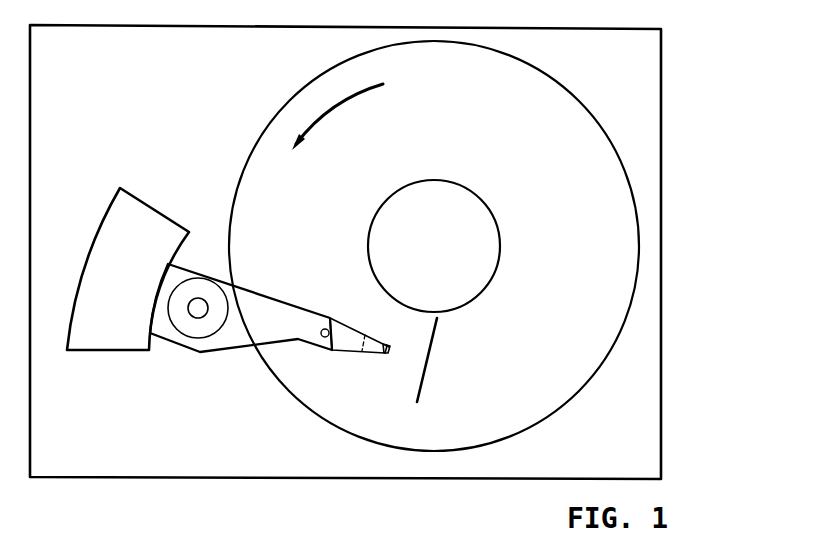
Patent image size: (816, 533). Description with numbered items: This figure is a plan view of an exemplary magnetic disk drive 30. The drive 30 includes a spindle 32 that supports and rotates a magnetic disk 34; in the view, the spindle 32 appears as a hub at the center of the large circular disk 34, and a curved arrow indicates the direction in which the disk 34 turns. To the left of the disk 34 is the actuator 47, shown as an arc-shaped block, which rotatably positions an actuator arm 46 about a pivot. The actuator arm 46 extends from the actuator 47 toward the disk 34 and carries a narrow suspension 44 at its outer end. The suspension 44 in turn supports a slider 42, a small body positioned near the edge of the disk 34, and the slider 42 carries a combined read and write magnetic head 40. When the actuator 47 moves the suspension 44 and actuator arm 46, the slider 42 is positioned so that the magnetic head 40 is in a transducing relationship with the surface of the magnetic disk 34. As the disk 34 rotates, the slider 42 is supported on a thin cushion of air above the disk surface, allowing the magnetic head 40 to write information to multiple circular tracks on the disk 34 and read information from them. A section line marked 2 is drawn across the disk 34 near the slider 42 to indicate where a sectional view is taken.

The magnetic disk drive 30 is at (682, 62).
The spindle 32 is at (474, 185).
The magnetic disk 34 is at (555, 267).
The magnetic head 40 is at (390, 354).
The slider 42 is at (389, 345).
The suspension 44 is at (347, 353).
The actuator arm 46 is at (290, 308).
The actuator 47 is at (160, 218).
The section line 2- 2 is at (452, 327).